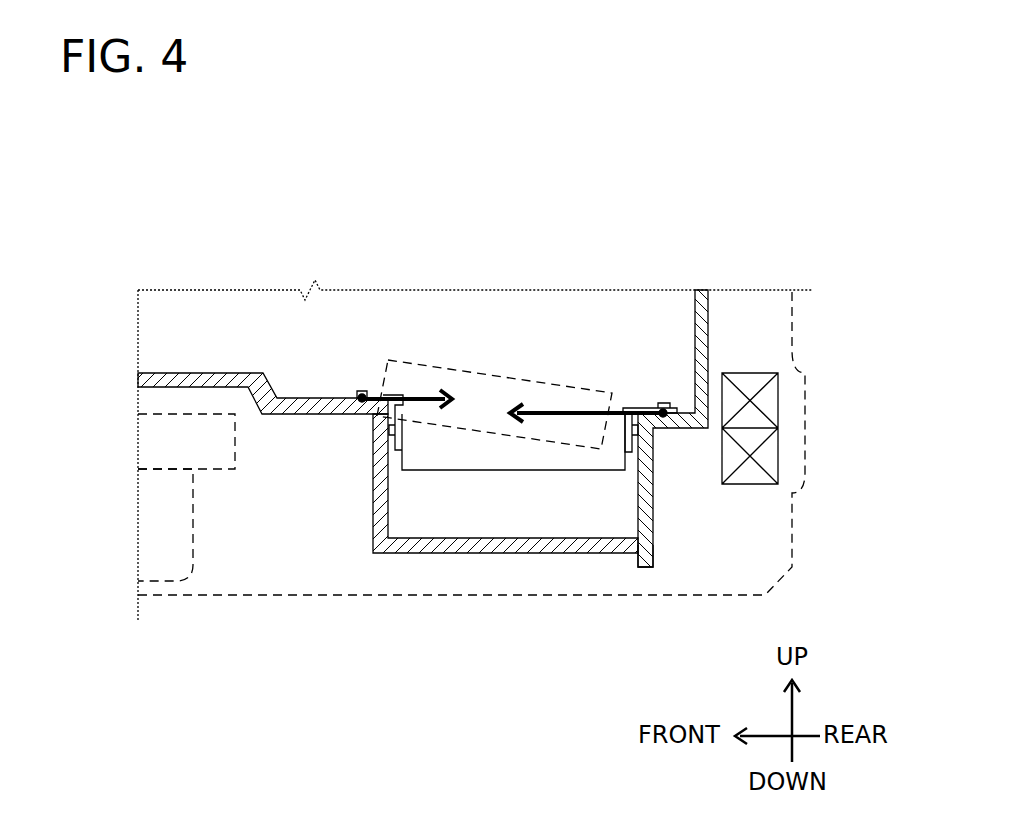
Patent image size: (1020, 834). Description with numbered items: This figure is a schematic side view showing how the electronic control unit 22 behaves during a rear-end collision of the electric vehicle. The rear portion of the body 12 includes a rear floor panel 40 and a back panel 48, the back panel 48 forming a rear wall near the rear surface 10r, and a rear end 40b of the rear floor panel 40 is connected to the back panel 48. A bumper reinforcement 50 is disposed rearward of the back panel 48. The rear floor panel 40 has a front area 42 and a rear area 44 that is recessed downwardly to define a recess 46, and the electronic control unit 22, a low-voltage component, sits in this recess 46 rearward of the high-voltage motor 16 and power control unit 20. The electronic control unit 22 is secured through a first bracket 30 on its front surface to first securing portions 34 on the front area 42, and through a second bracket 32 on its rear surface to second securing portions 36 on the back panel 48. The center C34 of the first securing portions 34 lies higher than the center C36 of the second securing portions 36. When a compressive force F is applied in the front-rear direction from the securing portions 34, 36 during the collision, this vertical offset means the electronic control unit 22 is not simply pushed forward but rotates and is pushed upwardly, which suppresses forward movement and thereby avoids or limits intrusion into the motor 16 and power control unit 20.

The rear surface 10r is at (793, 322).
The body 12 is at (583, 198).
The motor 16 is at (157, 528).
The power control unit 20 is at (157, 450).
The electronic control unit 22 is at (455, 362).
The first bracket 30 is at (381, 393).
The second bracket 32 is at (613, 408).
The first securing portions 34 is at (362, 397).
The center of the two first securing portions C34 is at (368, 395).
The second securing portions 36 is at (676, 405).
The center of the two second securing portions C36 is at (664, 405).
The compressive force F is at (425, 398).
The rear floor panel 40 is at (583, 495).
The rear end 40b is at (653, 545).
The front area 42 is at (307, 414).
The rear area 44 is at (390, 512).
The recess 46 is at (486, 512).
The back panel 48 is at (653, 515).
The bumper reinforcement 50 is at (778, 413).